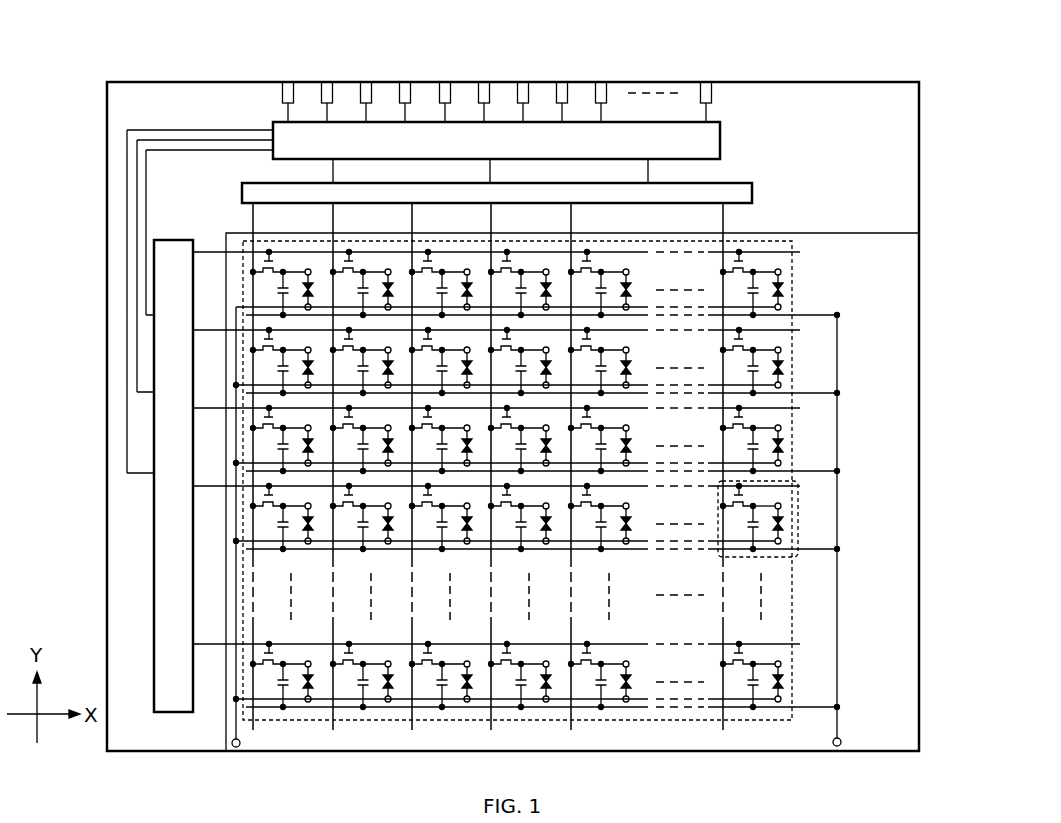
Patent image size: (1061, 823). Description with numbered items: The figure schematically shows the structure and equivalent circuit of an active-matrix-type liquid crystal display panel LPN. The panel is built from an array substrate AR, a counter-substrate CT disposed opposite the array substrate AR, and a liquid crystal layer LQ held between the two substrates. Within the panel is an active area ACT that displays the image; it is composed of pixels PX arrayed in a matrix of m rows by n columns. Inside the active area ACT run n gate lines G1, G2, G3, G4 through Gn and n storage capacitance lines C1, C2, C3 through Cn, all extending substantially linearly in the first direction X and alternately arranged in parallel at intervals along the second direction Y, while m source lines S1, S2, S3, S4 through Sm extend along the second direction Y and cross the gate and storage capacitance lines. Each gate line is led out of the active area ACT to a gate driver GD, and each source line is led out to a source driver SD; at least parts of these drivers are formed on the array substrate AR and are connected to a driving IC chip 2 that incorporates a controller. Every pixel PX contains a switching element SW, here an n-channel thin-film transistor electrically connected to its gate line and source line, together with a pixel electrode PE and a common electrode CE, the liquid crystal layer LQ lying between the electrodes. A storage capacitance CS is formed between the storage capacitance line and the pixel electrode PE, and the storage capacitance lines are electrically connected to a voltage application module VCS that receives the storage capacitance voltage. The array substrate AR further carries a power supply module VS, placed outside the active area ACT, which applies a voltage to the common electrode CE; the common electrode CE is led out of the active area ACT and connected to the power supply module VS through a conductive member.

The driving IC chip 2 is at (720, 122).
The liquid crystal display panel LPN is at (955, 90).
The source driver SD is at (753, 191).
The gate driver GD is at (153, 583).
The array substrate AR is at (169, 752).
The counter-substrate CT is at (892, 233).
The active area ACT is at (793, 340).
The source line S1 is at (256, 220).
The source line S2 is at (336, 220).
The source line S3 is at (415, 220).
The source line S4 is at (494, 220).
The source line Sm is at (726, 220).
The gate line G1 is at (207, 252).
The gate line G2 is at (207, 330).
The gate line G3 is at (207, 408).
The gate line G4 is at (207, 486).
The gate line Gn is at (207, 644).
The storage capacitance line C1 is at (818, 315).
The storage capacitance line C2 is at (818, 393).
The storage capacitance line C3 is at (818, 471).
The storage capacitance line Cn is at (818, 707).
The switching element SW is at (716, 501).
The storage capacitance CS is at (738, 532).
The pixel electrode PE is at (781, 504).
The liquid crystal layer LQ is at (784, 522).
The common electrode CE is at (781, 543).
The pixel PX is at (796, 557).
The power supply module VS is at (239, 746).
The voltage application module VCS is at (841, 740).